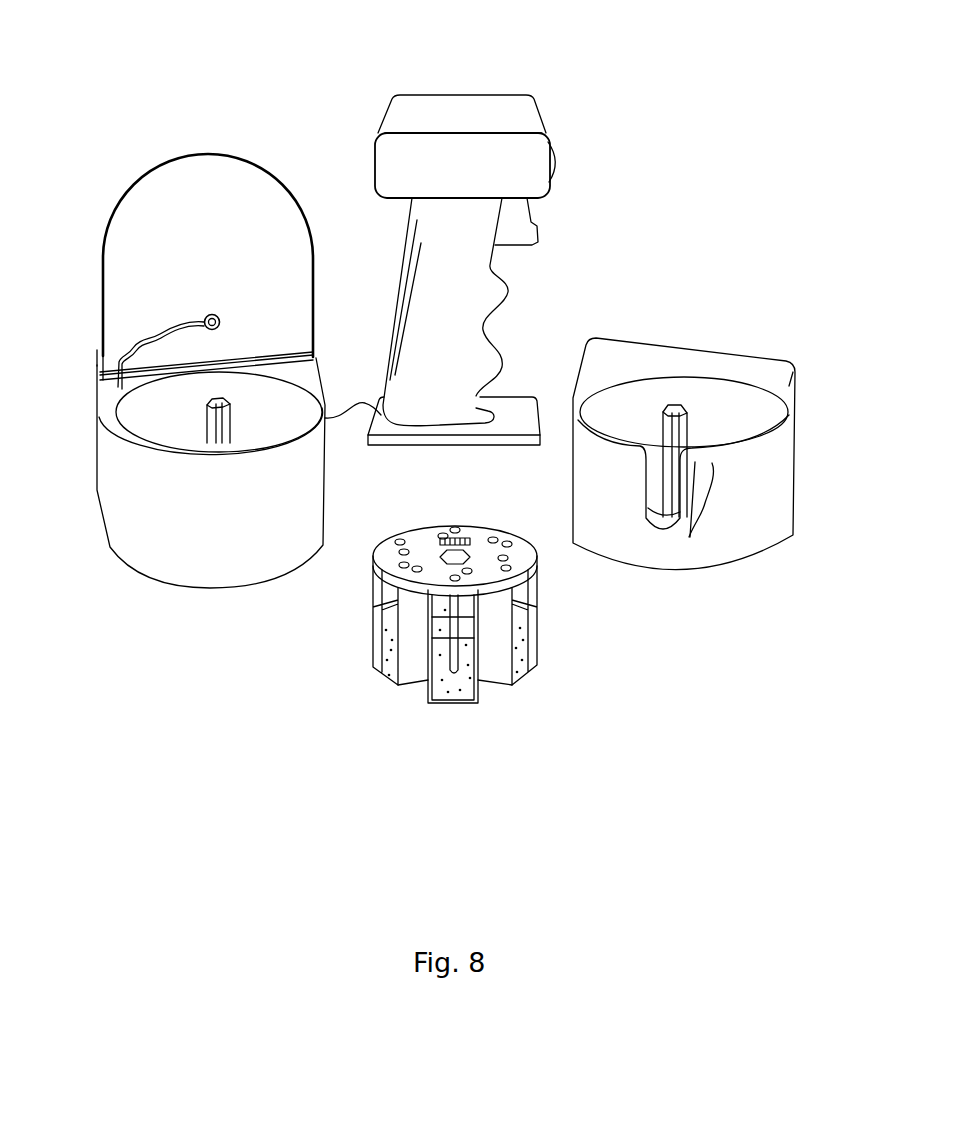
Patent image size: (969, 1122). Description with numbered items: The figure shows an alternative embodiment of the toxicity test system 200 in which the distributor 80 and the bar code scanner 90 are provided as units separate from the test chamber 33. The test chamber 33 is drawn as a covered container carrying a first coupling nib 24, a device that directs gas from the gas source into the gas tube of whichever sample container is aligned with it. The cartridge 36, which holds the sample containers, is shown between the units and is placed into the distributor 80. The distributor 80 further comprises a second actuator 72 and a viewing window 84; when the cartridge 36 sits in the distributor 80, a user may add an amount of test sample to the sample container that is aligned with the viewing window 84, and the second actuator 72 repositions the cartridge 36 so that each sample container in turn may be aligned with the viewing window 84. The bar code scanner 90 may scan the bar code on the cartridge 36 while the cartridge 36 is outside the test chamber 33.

The toxicity test system 200 is at (176, 99).
The first coupling nib 24 is at (212, 314).
The test chamber 33 is at (155, 422).
The bar code scanner 90 is at (556, 170).
The distributor 80 is at (710, 351).
The second actuator 72 is at (683, 425).
The viewing window 84 is at (707, 505).
The cartridge 36 is at (458, 703).